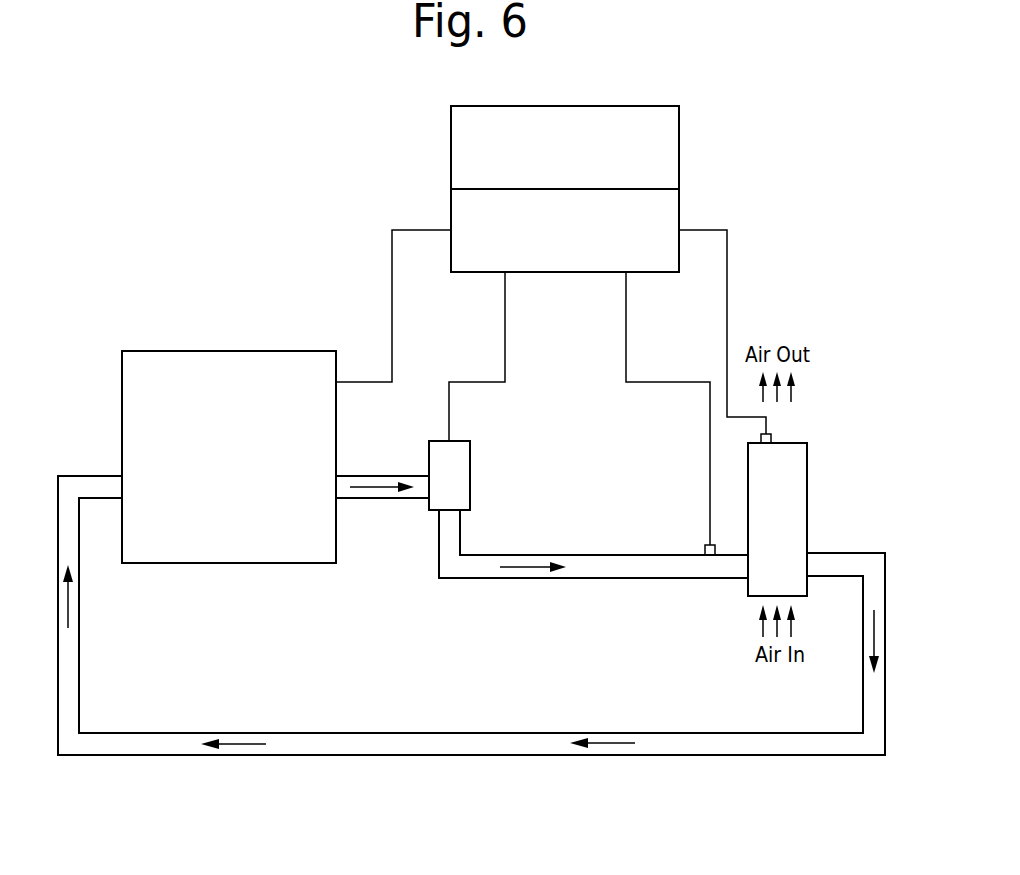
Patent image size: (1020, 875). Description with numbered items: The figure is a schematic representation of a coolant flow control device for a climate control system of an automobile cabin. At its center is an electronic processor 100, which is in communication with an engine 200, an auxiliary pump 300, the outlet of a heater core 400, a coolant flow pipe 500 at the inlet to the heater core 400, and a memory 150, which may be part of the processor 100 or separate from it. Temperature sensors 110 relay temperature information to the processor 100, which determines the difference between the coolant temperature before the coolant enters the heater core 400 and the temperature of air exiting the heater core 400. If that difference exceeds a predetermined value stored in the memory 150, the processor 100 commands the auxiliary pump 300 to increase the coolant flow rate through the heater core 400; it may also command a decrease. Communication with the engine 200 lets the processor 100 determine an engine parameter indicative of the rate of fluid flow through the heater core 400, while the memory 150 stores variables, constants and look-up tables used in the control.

The electronic processor 100 is at (680, 210).
The memory 150 is at (680, 150).
The engine 200 is at (121, 415).
The auxiliary pump 300 is at (470, 476).
The heater core 400 is at (807, 482).
The temperature sensor 110 is at (705, 548).
The coolant flow pipe 500 is at (445, 735).